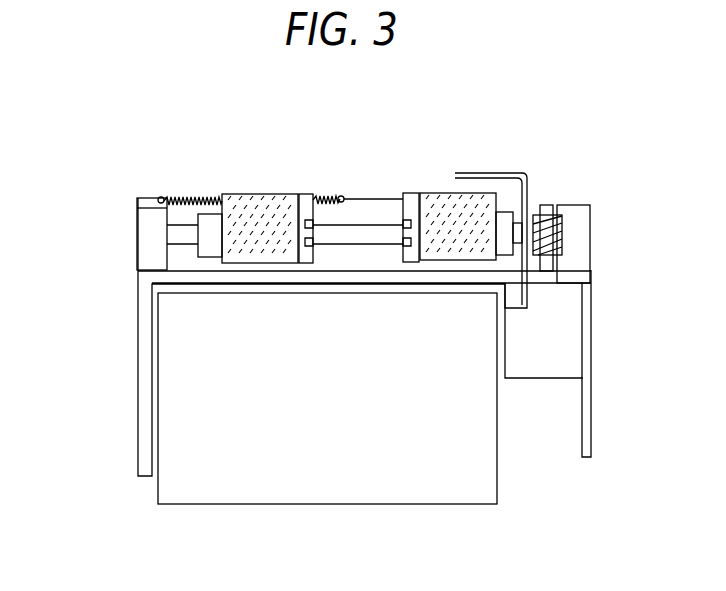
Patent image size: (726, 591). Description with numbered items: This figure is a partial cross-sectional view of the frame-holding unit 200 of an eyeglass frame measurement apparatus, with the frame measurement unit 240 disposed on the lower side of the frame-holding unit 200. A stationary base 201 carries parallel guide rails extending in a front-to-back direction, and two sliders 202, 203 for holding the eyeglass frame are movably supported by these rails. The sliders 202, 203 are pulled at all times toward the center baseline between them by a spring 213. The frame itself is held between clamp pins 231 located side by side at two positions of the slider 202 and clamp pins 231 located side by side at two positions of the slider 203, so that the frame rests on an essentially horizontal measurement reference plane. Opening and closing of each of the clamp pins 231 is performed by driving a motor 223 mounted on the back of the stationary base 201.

The frame-holding unit 200 is at (552, 196).
The stationary base 201 is at (142, 312).
The slider 202 is at (445, 211).
The slider 203 is at (259, 211).
The spring 213 is at (186, 196).
The motor 223 is at (547, 338).
The clamp pins 231 is at (306, 213).
The frame measurement unit 240 is at (260, 478).